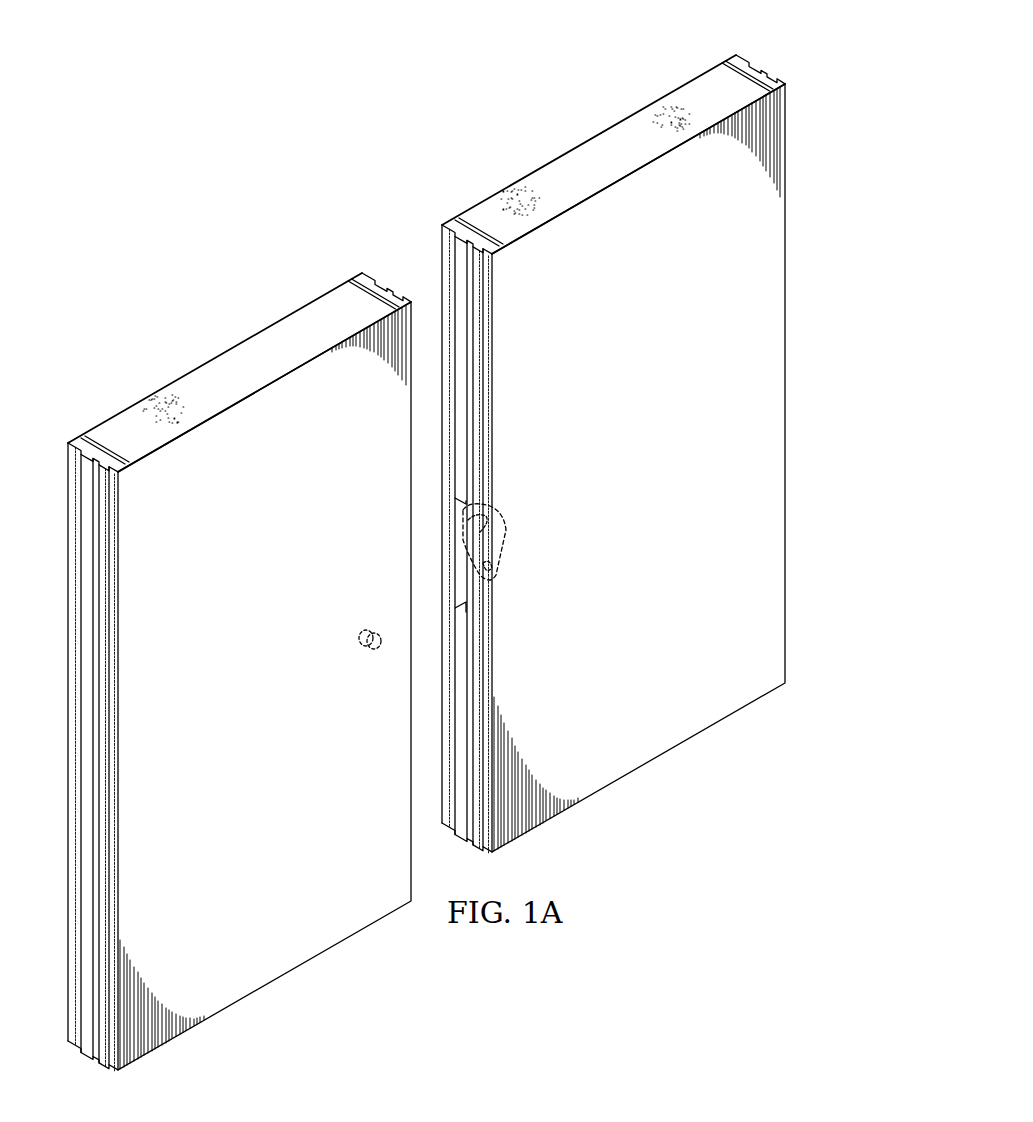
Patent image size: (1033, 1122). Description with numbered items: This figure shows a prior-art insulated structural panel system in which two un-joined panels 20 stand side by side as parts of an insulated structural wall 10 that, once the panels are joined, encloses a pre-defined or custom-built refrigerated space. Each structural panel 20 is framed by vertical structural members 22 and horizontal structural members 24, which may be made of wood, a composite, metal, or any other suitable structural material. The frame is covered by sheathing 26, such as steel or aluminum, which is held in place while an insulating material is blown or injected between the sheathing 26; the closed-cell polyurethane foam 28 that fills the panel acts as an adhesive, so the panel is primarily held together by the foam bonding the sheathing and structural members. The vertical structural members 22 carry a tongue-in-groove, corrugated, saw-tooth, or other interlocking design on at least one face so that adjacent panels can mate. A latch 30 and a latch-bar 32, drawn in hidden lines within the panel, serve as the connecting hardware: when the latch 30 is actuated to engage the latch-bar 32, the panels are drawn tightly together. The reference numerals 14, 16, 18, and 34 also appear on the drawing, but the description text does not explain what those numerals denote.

The insulated structural wall 10 is at (362, 142).
The panel 14 is at (374, 256).
The side face 16 is at (441, 287).
The tongue 18 is at (476, 247).
The structural panel 20 is at (259, 324).
The vertical structural member 22 is at (80, 442).
The horizontal structural member 24 is at (209, 368).
The sheathing 26 is at (246, 832).
The closed-cell polyurethane foam 28 is at (268, 579).
The latch 30 is at (506, 514).
The latch-bar 32 is at (358, 647).
The end cap strip 34 is at (140, 460).